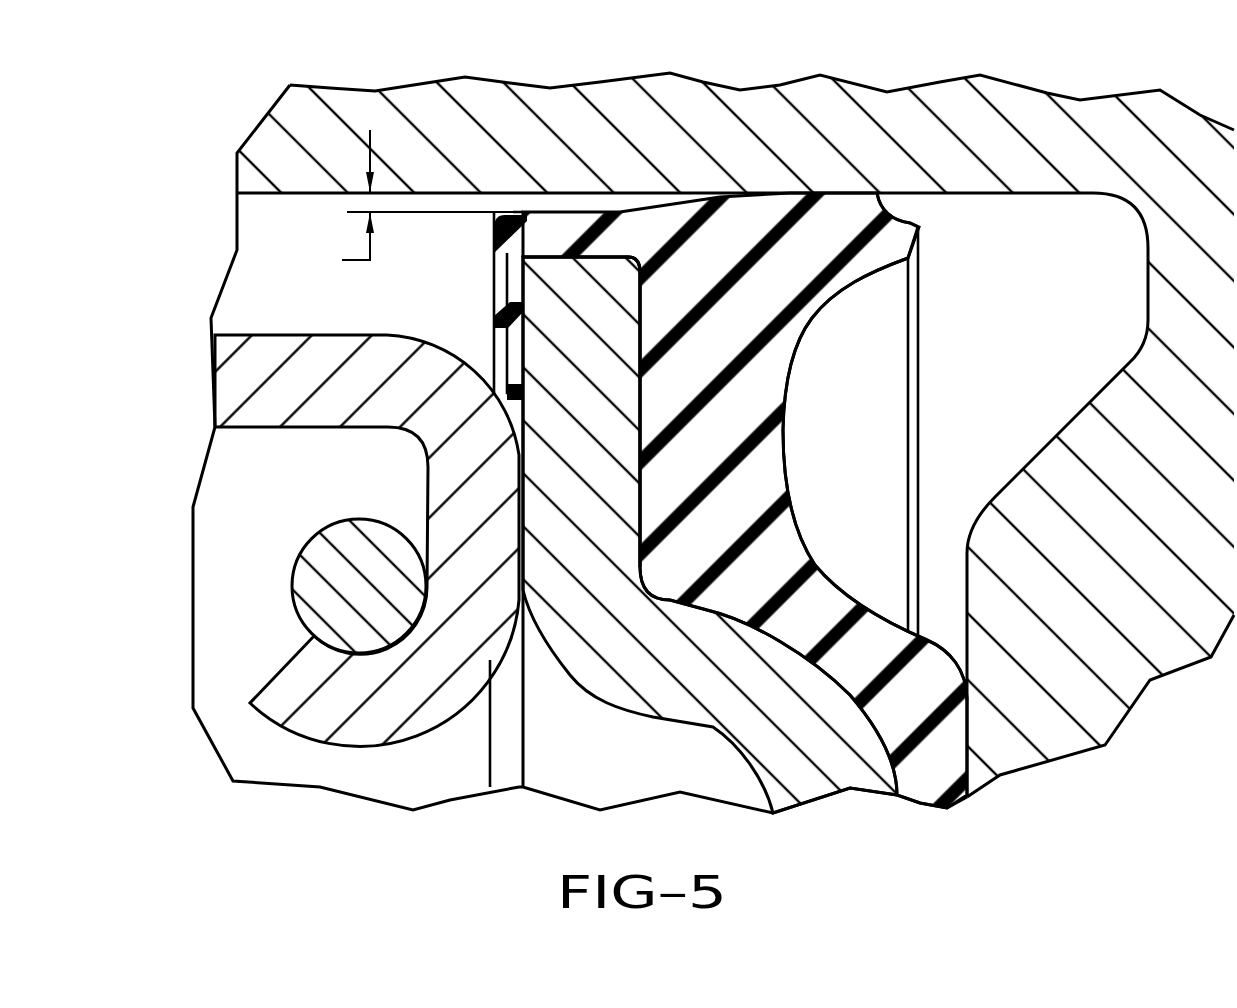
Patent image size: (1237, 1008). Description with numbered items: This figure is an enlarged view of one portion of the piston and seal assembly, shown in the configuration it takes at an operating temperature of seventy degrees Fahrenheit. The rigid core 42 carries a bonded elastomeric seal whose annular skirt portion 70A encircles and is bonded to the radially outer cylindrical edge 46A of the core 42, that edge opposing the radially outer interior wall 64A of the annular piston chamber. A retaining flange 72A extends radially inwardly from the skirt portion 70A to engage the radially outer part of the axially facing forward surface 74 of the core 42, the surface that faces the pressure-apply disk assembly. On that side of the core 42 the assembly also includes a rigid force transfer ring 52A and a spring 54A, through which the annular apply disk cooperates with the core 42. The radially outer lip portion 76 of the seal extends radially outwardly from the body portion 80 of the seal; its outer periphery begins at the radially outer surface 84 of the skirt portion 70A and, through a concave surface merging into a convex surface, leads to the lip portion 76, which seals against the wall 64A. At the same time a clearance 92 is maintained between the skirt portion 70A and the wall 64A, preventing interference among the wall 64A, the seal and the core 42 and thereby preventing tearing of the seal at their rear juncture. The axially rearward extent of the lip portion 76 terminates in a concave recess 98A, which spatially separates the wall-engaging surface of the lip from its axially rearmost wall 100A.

The core 42 is at (603, 683).
The radially outer cylindrical edge 46A is at (577, 256).
The rigid force transfer ring 52A is at (280, 402).
The spring 54A is at (350, 543).
The radially outer interior wall 64A is at (1063, 196).
The annular skirt portion 70A is at (545, 233).
The retaining flange 72A is at (503, 290).
The axially facing forward surface 74 is at (520, 746).
The radially outer lip portion 76 is at (832, 240).
The body portion 80 is at (762, 478).
The radially outer surface 84 is at (613, 210).
The clearance 92 is at (406, 204).
The concave recess 98A is at (905, 215).
The rearmost wall 100A is at (920, 246).